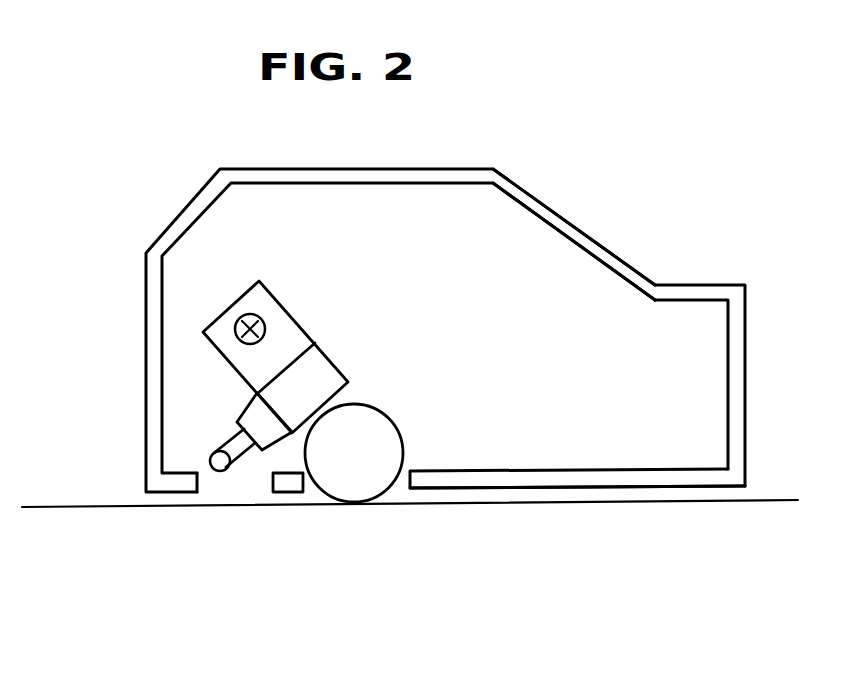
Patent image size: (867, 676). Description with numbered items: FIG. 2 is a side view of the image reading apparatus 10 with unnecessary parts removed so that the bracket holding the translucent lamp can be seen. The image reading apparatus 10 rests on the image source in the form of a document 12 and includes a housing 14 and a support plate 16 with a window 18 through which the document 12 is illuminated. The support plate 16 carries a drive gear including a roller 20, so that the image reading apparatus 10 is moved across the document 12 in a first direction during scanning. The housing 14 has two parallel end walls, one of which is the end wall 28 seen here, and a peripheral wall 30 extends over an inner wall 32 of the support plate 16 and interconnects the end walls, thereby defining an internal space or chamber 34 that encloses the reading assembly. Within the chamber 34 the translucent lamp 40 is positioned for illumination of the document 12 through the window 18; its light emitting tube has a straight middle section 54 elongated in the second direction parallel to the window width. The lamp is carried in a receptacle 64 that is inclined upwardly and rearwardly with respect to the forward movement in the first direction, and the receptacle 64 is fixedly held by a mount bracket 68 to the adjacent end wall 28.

The image reading apparatus 10 is at (585, 198).
The document 12 is at (758, 500).
The housing 14 is at (473, 169).
The support plate 16 is at (535, 487).
The window 18 is at (273, 478).
The roller 20 is at (402, 430).
The end wall 28 is at (472, 330).
The peripheral wall 30 is at (688, 300).
The inner wall 32 is at (608, 470).
The internal space or chamber 34 is at (605, 297).
The translucent lamp 40 is at (207, 453).
The straight middle section 54 is at (213, 472).
The receptacle 64 is at (252, 405).
The mount bracket 68 is at (275, 295).